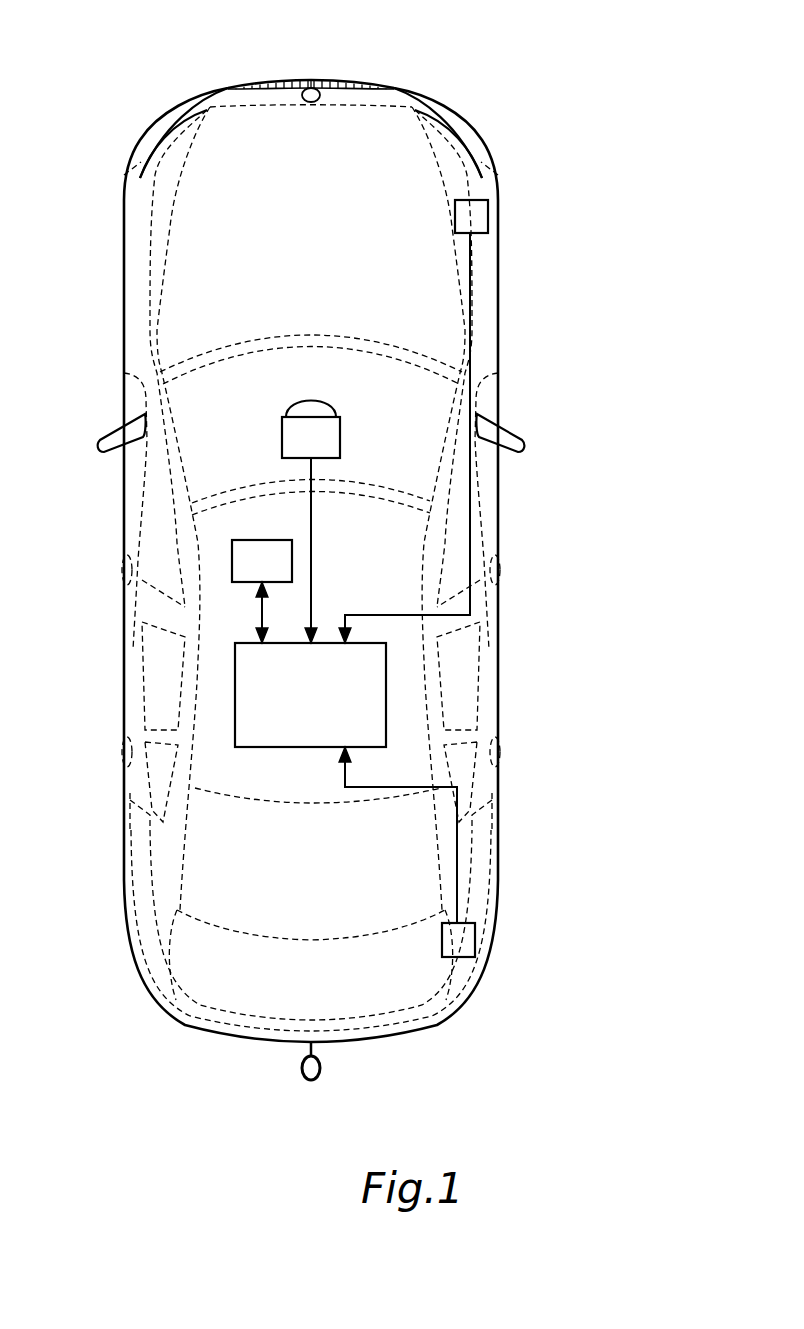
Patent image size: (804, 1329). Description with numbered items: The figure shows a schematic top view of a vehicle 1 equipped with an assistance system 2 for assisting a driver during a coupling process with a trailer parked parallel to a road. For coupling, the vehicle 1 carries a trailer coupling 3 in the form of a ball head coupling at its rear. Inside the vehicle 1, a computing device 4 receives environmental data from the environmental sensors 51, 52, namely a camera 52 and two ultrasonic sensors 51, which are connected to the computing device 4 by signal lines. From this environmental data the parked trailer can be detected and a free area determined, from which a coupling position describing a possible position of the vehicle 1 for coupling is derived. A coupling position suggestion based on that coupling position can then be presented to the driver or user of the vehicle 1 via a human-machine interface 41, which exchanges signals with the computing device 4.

The vehicle 1 is at (420, 94).
The assistance system 2 is at (223, 655).
The trailer coupling 3 is at (293, 1077).
The computing device 4 is at (295, 742).
The human-machine interface 41 is at (243, 552).
The ultrasonic sensors 51 is at (482, 215).
The camera 52 is at (331, 433).